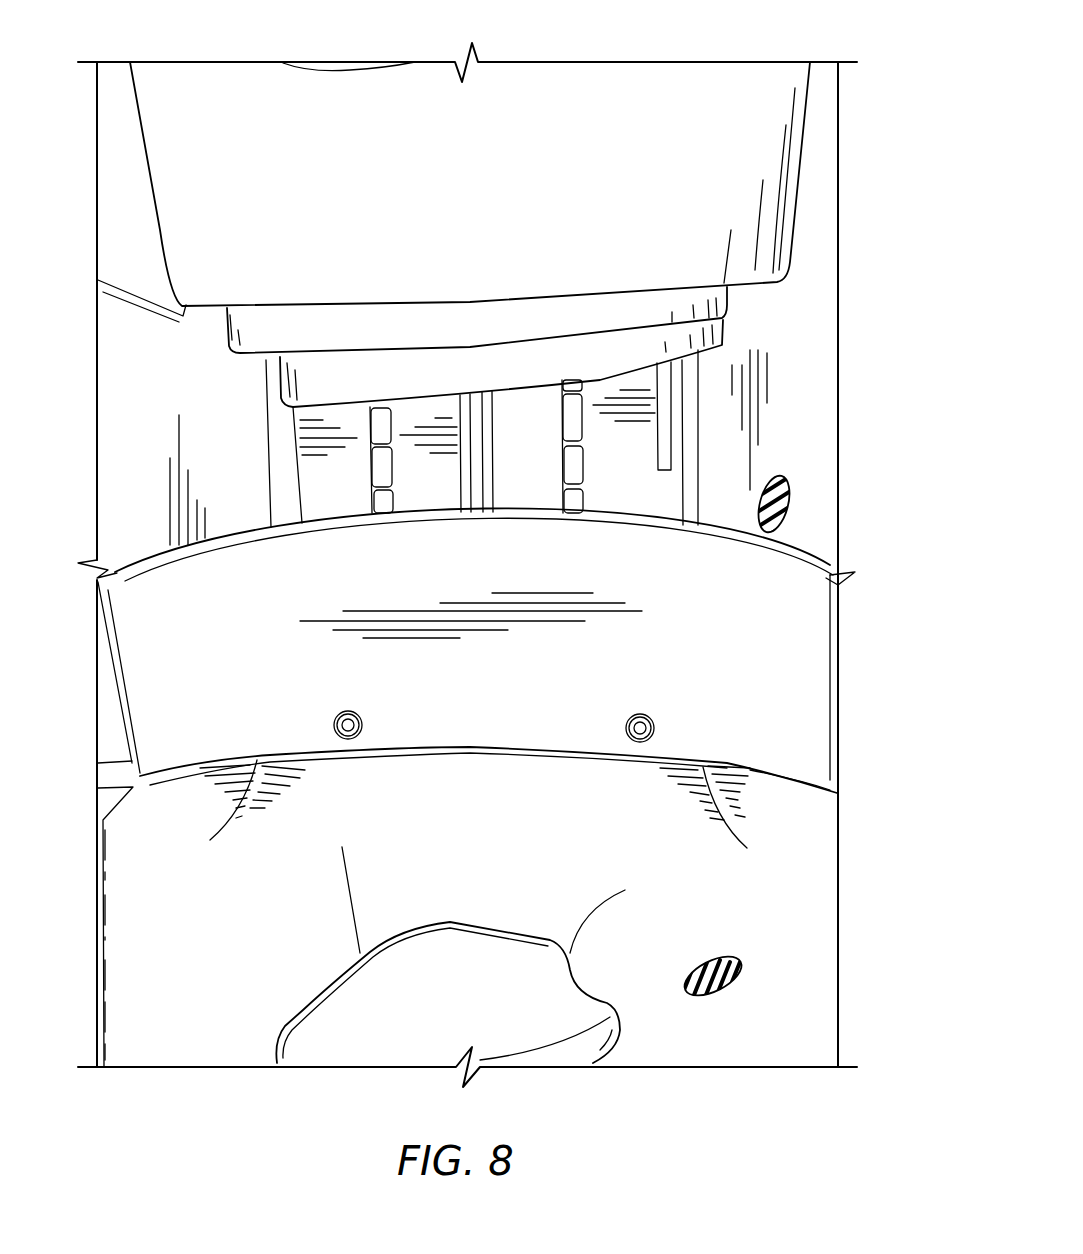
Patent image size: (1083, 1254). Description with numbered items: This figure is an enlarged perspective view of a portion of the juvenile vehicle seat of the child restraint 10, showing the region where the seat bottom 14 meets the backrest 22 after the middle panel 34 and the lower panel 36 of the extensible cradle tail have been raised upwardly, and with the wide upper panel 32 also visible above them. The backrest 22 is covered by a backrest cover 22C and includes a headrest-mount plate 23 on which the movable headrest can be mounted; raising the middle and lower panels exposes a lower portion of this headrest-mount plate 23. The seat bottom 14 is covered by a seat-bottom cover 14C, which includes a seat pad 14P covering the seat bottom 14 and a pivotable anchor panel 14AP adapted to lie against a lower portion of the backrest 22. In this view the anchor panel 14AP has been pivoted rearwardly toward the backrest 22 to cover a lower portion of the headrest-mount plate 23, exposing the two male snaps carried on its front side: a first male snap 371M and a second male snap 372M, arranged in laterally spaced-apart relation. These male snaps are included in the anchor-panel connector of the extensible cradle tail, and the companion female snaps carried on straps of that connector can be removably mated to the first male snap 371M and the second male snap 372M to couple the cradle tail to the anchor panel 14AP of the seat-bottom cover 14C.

The child restraint 10 is at (688, 56).
The wide upper panel 32 is at (454, 192).
The middle panel 34 is at (402, 326).
The lower panel 36 is at (512, 367).
The headrest-mount plate 23 is at (686, 412).
The backrest cover 22C is at (201, 402).
The backrest 22 is at (789, 500).
The anchor panel 14AP is at (778, 645).
The second male snap 372M is at (334, 724).
The first male snap 371M is at (655, 725).
The seat-bottom cover 14C is at (193, 912).
The seat bottom 14 is at (741, 967).
The seat pad 14P is at (728, 1048).